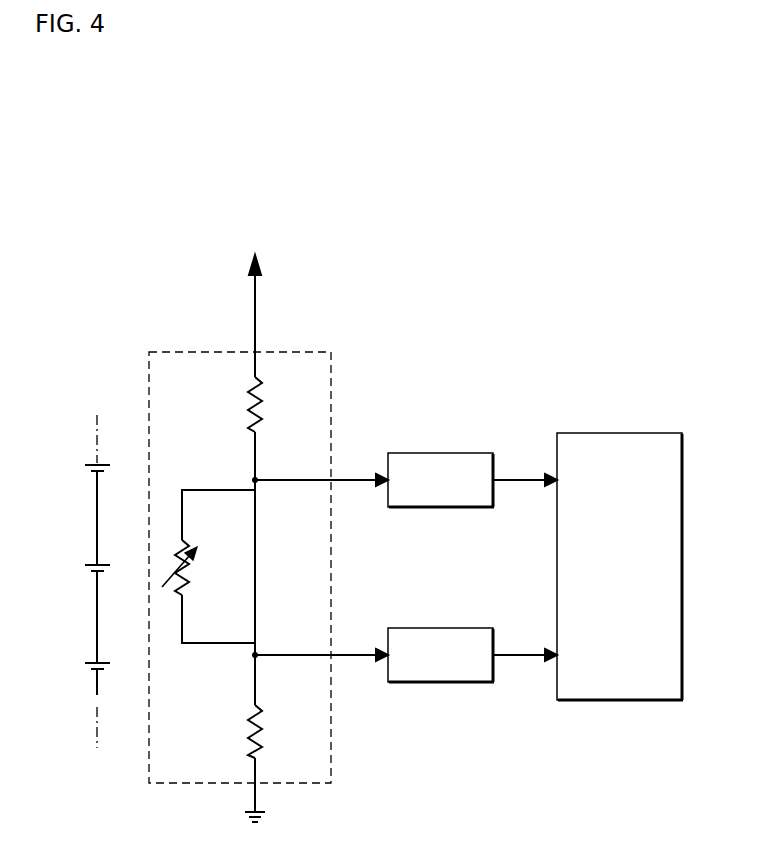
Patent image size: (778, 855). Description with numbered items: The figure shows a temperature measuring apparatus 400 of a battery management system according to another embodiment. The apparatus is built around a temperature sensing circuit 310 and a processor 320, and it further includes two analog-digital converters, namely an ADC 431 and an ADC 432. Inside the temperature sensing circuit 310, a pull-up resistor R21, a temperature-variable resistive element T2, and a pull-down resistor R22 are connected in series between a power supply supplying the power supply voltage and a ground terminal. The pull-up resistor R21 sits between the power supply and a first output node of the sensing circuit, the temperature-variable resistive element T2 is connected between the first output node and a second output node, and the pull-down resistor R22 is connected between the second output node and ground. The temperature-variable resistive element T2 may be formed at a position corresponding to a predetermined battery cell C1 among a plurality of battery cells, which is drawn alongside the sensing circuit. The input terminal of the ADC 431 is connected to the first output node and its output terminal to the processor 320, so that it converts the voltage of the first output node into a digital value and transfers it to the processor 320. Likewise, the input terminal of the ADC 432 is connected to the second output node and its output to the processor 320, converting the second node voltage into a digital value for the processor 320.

The temperature measuring apparatus 400 is at (386, 258).
The temperature sensing circuit 310 is at (172, 352).
The processor 320 is at (615, 433).
The ADC 431 is at (446, 453).
The ADC 432 is at (458, 682).
The pull-up resistor R21 is at (260, 393).
The pull-down resistor R22 is at (262, 731).
The temperature-variable resistive element T2 is at (190, 573).
The battery cell C1 is at (91, 565).